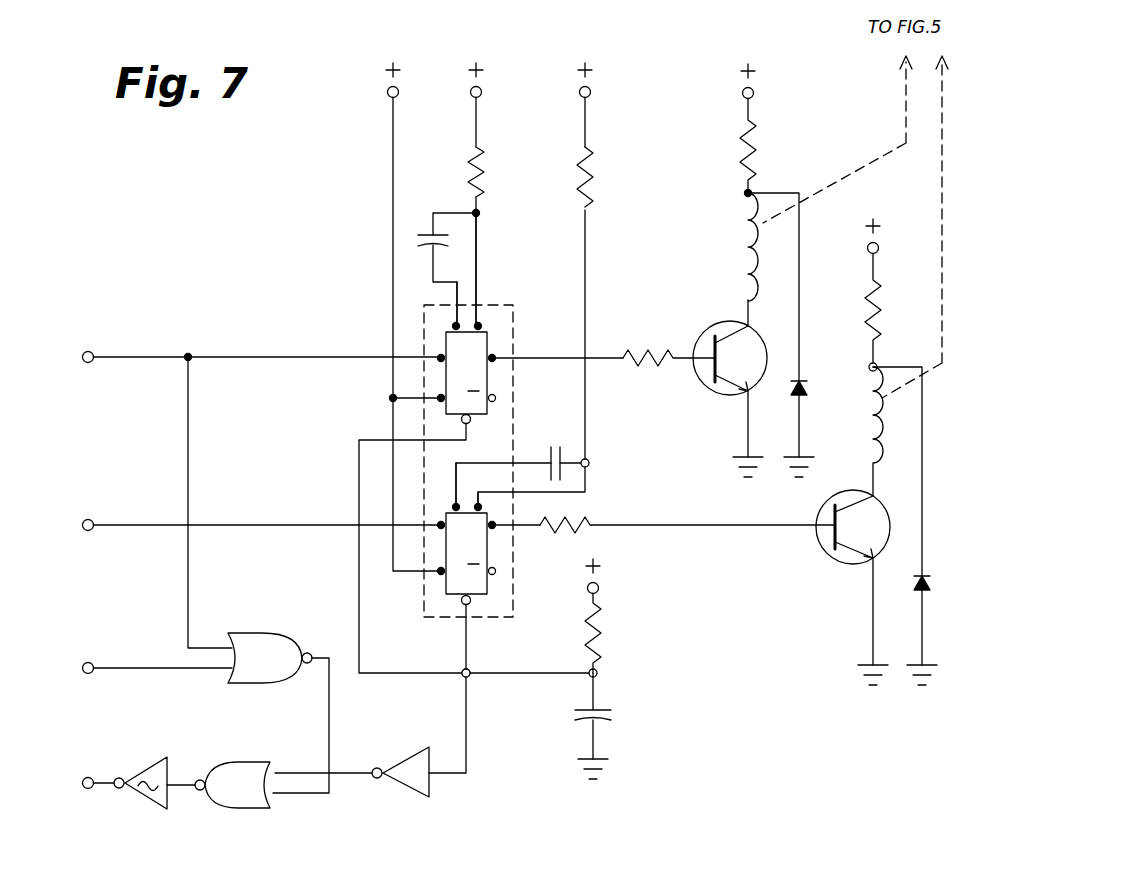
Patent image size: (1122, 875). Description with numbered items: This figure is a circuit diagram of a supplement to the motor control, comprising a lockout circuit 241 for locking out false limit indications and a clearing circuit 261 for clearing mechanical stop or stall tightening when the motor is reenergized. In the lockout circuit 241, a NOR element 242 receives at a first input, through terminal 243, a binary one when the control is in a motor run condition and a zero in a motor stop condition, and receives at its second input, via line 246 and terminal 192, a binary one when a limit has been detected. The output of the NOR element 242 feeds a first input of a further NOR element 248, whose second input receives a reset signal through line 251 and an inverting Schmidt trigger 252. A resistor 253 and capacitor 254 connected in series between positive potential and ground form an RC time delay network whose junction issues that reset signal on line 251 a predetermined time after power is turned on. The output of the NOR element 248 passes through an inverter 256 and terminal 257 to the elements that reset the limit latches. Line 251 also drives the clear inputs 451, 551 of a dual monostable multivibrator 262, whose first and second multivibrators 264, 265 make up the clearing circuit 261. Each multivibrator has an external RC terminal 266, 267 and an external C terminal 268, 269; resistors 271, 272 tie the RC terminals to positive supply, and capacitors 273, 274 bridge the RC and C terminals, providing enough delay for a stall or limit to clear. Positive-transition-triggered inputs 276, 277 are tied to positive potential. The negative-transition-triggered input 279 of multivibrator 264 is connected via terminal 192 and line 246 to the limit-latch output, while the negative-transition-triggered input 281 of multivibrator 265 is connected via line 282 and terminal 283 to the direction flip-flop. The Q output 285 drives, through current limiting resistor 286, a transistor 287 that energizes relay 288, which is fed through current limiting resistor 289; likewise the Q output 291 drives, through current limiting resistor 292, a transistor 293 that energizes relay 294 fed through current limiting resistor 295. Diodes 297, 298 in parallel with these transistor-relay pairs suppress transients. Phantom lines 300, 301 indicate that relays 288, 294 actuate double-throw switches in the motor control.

The terminal 192 is at (92, 350).
The line 246 is at (292, 356).
The terminal 283 is at (92, 517).
The line 282 is at (282, 523).
The terminal 243 is at (84, 660).
The lockout circuit 241 is at (282, 735).
The NOR element 242 is at (284, 670).
The further NOR element 248 is at (260, 797).
The inverter 256 is at (160, 760).
The terminal 257 is at (105, 770).
The inverting Schmidt trigger 252 is at (412, 792).
The line 251 is at (472, 680).
The resistor 271 is at (470, 176).
The resistor 272 is at (578, 186).
The capacitor 273 is at (418, 240).
The external RC terminal 266 is at (480, 250).
The external C terminal 268 is at (456, 297).
The dual monostable multivibrator 262 is at (449, 627).
The first multivibrator 264 is at (495, 332).
The negative-transition-triggered input 279 is at (441, 358).
The positive-transition-triggered input 276 is at (441, 400).
The Q output 285 is at (494, 360).
The clear input 451 is at (472, 420).
The capacitor 274 is at (563, 455).
The external C terminal 269 is at (459, 497).
The external RC terminal 267 is at (481, 504).
The second multivibrator 265 is at (502, 575).
The negative-transition-triggered input 281 is at (441, 525).
The positive-transition-triggered input 277 is at (441, 573).
The Q output 291 is at (494, 528).
The clear input 551 is at (472, 605).
The current limiting resistor 292 is at (590, 522).
The resistor 253 is at (600, 635).
The capacitor 254 is at (608, 718).
The clearing circuit 261 is at (692, 477).
The current limiting resistor 286 is at (668, 372).
The transistor 287 is at (706, 330).
The current limiting resistor 289 is at (742, 152).
The relay 288 is at (748, 262).
The diode 297 is at (805, 388).
The current limiting resistor 295 is at (866, 316).
The relay 294 is at (867, 430).
The transistor 293 is at (838, 562).
The diode 298 is at (924, 592).
The phantom line 300 is at (906, 97).
The phantom line 301 is at (940, 175).